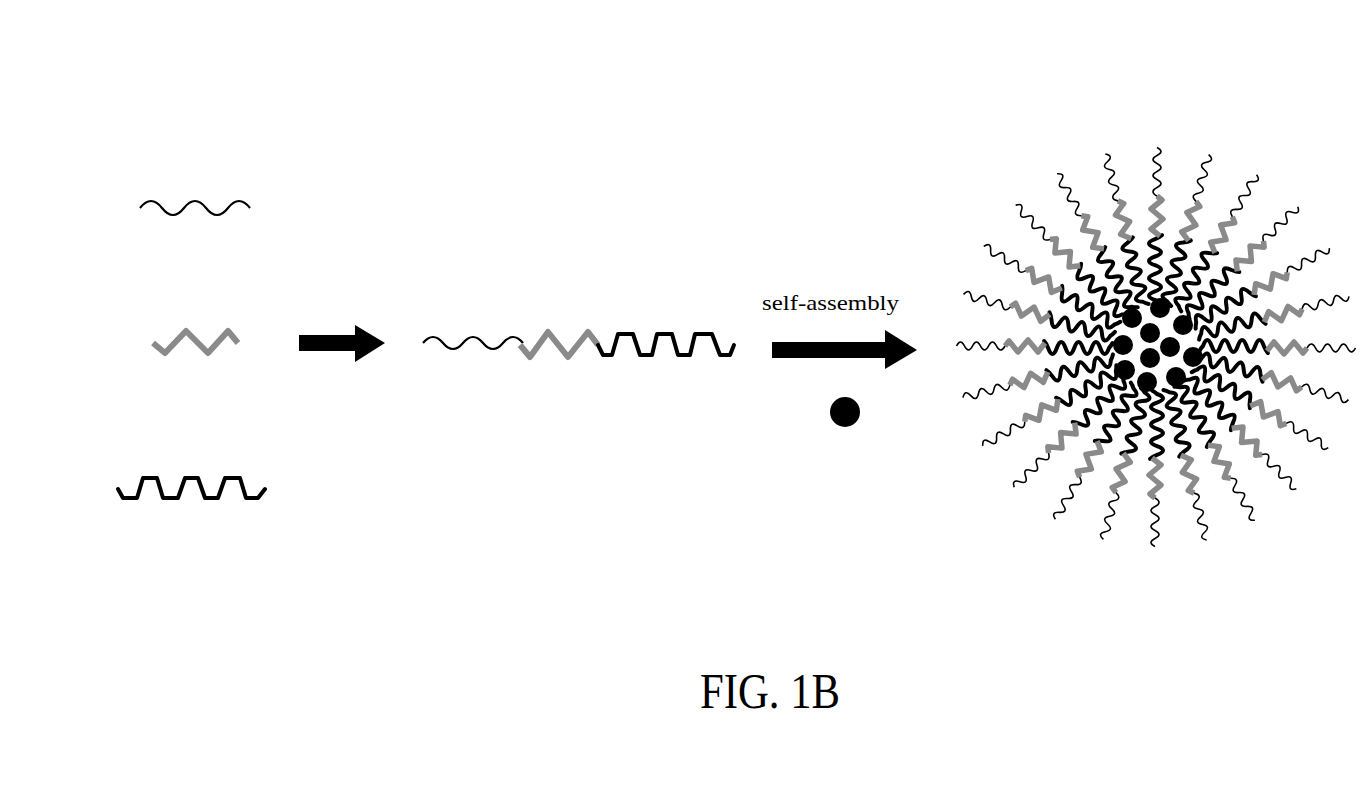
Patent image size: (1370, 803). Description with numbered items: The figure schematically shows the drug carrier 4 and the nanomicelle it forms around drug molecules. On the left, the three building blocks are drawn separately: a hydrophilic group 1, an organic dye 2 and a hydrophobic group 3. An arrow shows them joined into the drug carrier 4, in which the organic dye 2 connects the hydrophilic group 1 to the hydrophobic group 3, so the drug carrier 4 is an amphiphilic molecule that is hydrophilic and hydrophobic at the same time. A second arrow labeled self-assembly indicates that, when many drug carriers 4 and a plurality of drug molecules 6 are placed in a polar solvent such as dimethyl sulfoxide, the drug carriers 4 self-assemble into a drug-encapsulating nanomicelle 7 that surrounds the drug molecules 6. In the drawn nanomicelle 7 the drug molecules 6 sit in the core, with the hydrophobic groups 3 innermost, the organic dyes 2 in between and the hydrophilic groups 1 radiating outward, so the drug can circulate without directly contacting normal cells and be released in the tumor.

The hydrophilic group 1 is at (193, 200).
The organic dye 2 is at (191, 325).
The hydrophobic group 3 is at (192, 468).
The drug carrier 4 is at (572, 303).
The drug molecule 6 is at (846, 427).
The drug-encapsulating nanomicelle 7 is at (1121, 118).